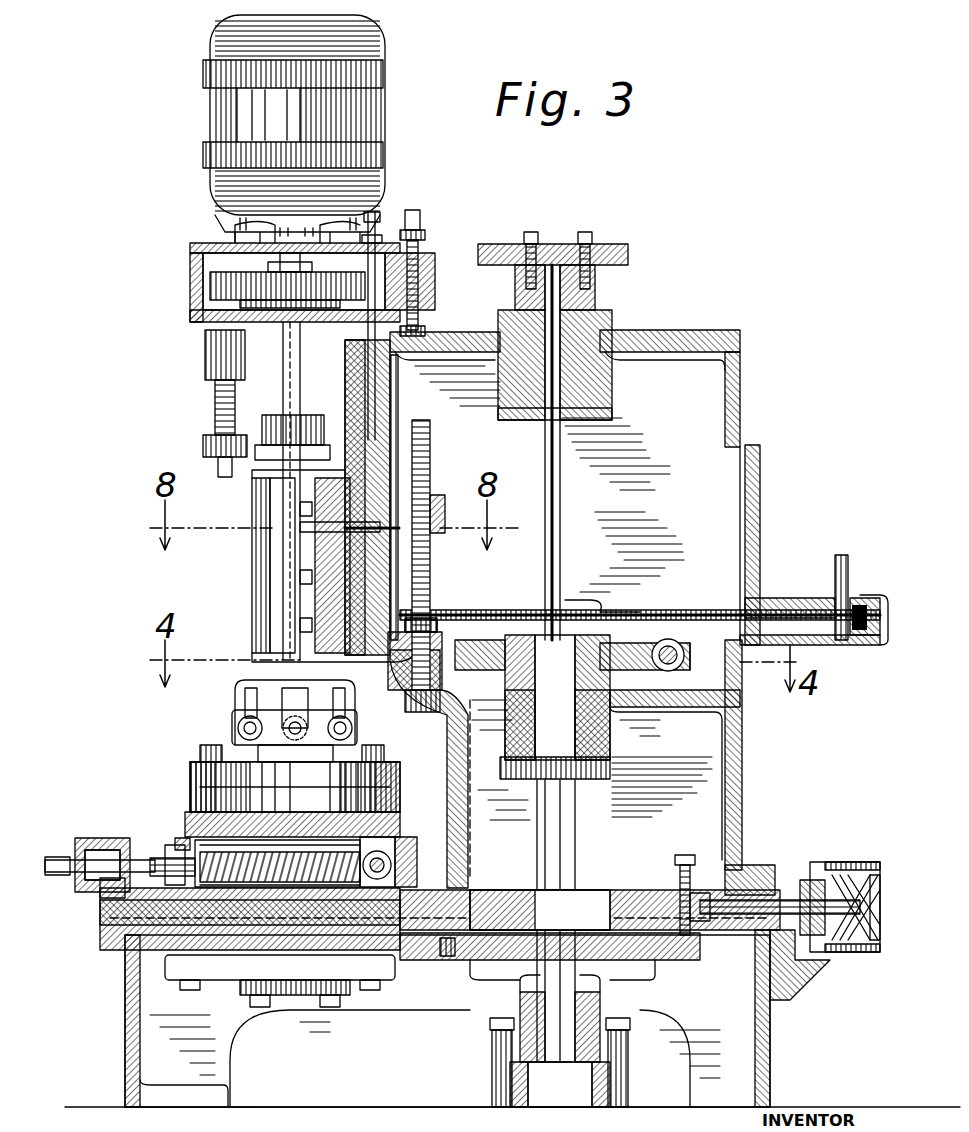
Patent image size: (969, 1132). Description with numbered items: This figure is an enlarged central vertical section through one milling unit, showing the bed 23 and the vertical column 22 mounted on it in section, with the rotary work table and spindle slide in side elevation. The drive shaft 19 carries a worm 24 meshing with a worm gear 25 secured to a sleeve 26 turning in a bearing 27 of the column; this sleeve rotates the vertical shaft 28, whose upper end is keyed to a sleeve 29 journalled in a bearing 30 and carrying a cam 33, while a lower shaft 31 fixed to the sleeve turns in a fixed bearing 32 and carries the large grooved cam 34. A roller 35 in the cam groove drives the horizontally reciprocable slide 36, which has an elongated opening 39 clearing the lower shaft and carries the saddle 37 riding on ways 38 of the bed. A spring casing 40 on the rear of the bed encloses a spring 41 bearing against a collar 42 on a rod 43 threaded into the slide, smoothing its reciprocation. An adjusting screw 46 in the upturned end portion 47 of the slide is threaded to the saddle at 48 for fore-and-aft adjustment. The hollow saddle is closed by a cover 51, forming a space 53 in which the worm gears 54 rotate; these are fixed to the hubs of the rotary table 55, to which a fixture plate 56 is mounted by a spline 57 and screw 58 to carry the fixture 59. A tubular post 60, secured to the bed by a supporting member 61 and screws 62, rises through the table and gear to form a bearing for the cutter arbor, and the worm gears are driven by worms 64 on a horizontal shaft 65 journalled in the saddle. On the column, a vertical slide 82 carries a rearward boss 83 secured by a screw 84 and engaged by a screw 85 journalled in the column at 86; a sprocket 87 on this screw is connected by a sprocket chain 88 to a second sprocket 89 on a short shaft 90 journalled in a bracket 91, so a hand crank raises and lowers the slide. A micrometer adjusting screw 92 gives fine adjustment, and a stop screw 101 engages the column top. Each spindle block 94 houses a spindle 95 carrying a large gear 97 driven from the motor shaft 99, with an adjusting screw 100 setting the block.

The drive shaft 19 is at (684, 660).
The column 22 is at (745, 392).
The bed 23 is at (240, 1018).
The worm 24 is at (668, 640).
The worm gear 25 is at (612, 640).
The sleeve 26 is at (505, 726).
The bearing 27 is at (612, 730).
The vertical shaft 28 is at (562, 502).
The sleeve 29 is at (596, 296).
The bearing 30 is at (614, 377).
The lower shaft 31 is at (560, 838).
The fixed bearing 32 is at (605, 1002).
The cam 33 is at (612, 250).
The grooved cam 34 is at (655, 962).
The roller 35 is at (700, 948).
The slide 36 is at (110, 925).
The saddle 37 is at (405, 850).
The ways 38 is at (128, 950).
The elongated opening 39 is at (520, 905).
The spring casing 40 is at (860, 852).
The spring 41 is at (865, 952).
The collar 42 is at (810, 885).
The rod 43 is at (818, 965).
The adjusting screw 46 is at (58, 858).
The end portion 47 is at (108, 838).
The threaded connection 48 is at (180, 840).
The cover 51 is at (402, 816).
The space 53 is at (410, 840).
The worm gears 54 is at (300, 845).
The rotary table 55 is at (270, 795).
The fixture plate 56 is at (392, 768).
The spline 57 is at (205, 778).
The screw 58 is at (205, 752).
The fixture 59 is at (285, 720).
The tubular post 60 is at (262, 988).
The supporting member 61 is at (215, 965).
The screws 62 is at (330, 1010).
The worms 64 is at (392, 866).
The horizontal shaft 65 is at (392, 875).
The vertical slide 82 is at (395, 440).
The boss 83 is at (440, 500).
The screw 84 is at (305, 530).
The screw 85 is at (432, 452).
The journal 86 is at (458, 616).
The sprocket 87 is at (425, 620).
The sprocket chain 88 is at (590, 600).
The second sprocket 89 is at (850, 640).
The short shaft 90 is at (852, 548).
The bracket 91 is at (780, 598).
The micrometer adjusting screw 92 is at (378, 225).
The spindle block 94 is at (268, 565).
The spindle 95 is at (284, 366).
The gear 97 is at (210, 285).
The motor shaft 99 is at (290, 262).
The adjusting screw 100 is at (213, 403).
The stop screw 101 is at (425, 222).